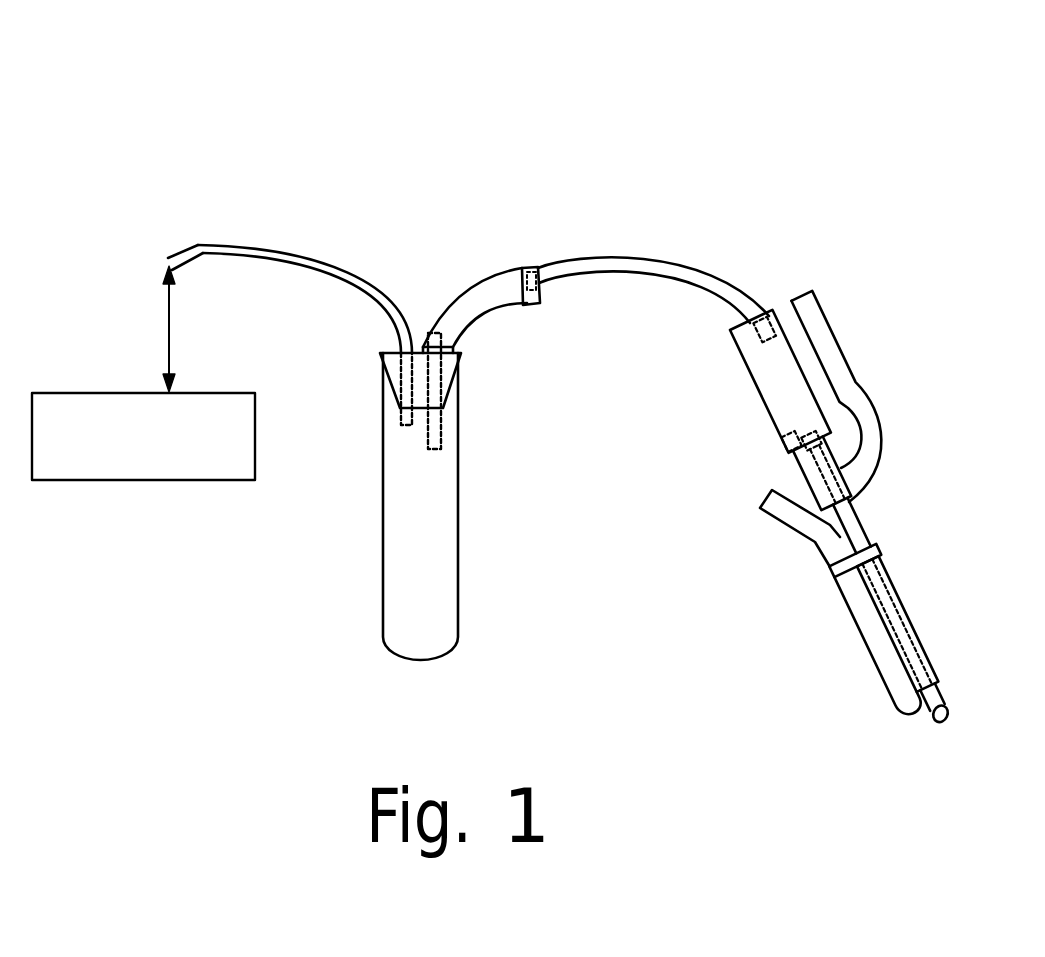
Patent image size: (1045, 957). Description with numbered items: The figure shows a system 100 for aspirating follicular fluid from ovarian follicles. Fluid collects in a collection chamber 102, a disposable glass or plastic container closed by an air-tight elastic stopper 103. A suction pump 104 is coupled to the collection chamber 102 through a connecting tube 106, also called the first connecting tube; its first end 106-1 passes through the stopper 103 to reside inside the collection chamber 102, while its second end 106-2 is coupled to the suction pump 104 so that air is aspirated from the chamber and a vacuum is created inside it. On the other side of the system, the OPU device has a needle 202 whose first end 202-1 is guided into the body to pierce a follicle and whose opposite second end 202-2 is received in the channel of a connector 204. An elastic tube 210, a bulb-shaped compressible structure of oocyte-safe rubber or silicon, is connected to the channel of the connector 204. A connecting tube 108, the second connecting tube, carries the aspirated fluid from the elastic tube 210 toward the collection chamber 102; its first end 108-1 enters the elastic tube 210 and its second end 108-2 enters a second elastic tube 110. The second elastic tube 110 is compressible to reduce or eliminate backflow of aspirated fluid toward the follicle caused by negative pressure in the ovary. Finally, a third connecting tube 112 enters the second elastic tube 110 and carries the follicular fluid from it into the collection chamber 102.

The system 100 is at (470, 128).
The collection chamber 102 is at (459, 638).
The stopper 103 is at (448, 395).
The suction pump 104 is at (246, 450).
The connecting tube 106 is at (285, 250).
The first end 106-1 is at (403, 427).
The second end 106-2 is at (172, 262).
The connecting tube 108 is at (682, 268).
The first end 108-1 is at (772, 330).
The second end 108-2 is at (525, 270).
The second elastic tube 110 is at (507, 306).
The third connecting tube 112 is at (438, 418).
The needle 202 is at (858, 523).
The first end 202-1 is at (932, 721).
The second end 202-2 is at (800, 442).
The connector 204 is at (808, 483).
The elastic tube 210 is at (743, 353).